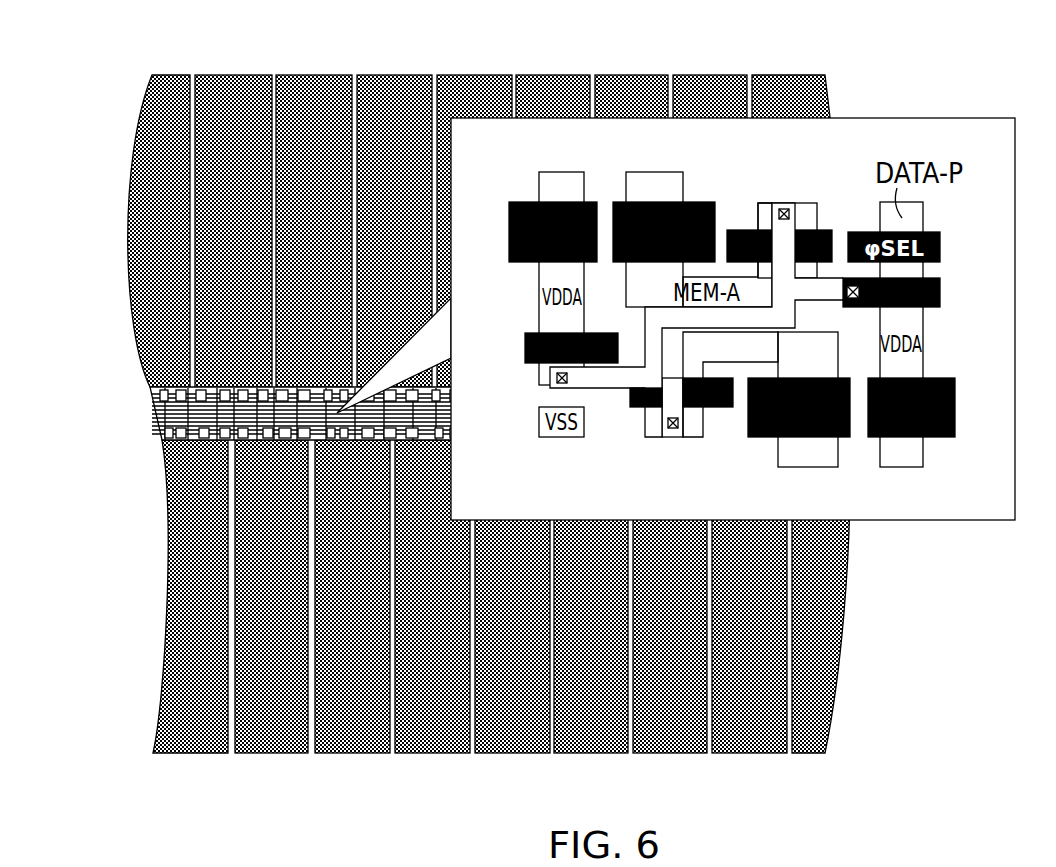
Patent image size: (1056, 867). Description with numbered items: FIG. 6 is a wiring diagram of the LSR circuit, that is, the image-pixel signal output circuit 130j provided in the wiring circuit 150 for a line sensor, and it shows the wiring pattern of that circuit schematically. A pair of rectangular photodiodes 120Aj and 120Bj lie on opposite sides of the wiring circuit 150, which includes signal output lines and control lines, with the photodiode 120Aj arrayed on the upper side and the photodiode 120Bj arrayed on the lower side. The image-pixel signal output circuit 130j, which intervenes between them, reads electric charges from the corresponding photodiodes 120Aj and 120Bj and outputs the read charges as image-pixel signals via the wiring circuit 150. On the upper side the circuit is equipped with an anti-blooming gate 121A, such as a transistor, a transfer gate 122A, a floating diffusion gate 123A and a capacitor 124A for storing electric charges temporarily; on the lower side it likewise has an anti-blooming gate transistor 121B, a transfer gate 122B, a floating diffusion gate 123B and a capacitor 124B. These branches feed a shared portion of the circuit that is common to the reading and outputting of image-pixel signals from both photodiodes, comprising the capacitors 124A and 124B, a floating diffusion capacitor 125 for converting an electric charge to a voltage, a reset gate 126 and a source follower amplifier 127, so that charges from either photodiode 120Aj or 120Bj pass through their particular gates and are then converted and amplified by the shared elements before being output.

The photodiode 120Aj is at (317, 75).
The photodiode 120Bj is at (355, 753).
The image-pixel signal output circuit 130j is at (160, 458).
The wiring circuit 150 is at (160, 388).
The anti-blooming gate 121A is at (525, 202).
The transfer gate 122A is at (697, 202).
The floating diffusion gate 123A is at (745, 230).
The capacitor 124A is at (647, 306).
The anti-blooming gate transistor (B side) 121B is at (935, 438).
The transfer gate 122B is at (758, 438).
The floating diffusion gate 123B is at (640, 410).
The capacitor 124B is at (820, 315).
The floating diffusion capacitor 125 is at (673, 430).
The reset gate 126 is at (525, 349).
The source follower amplifier 127 is at (940, 292).